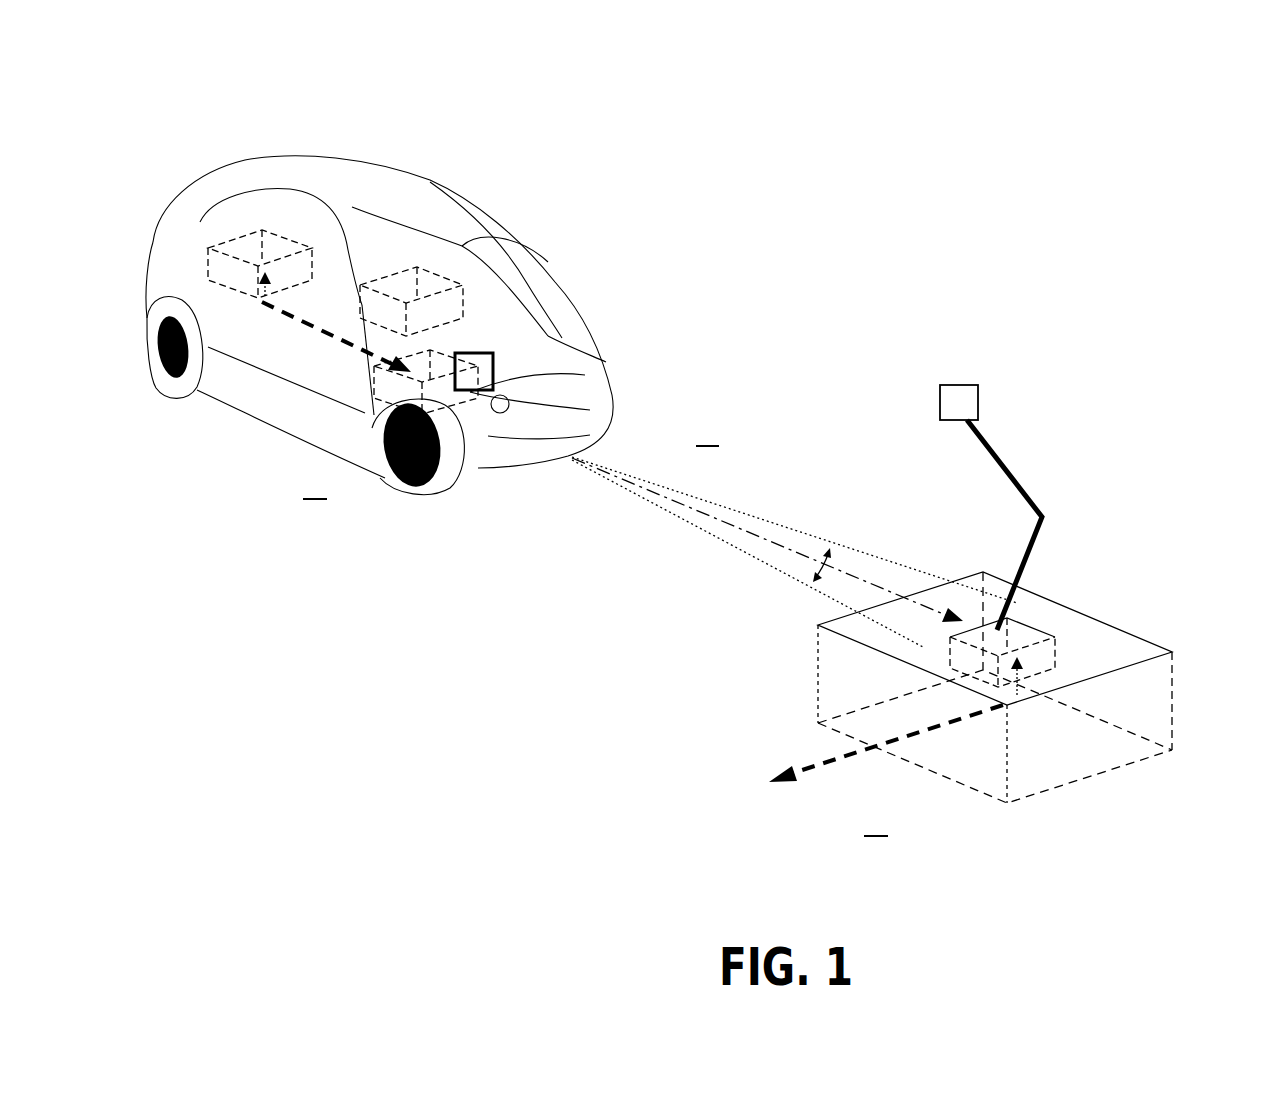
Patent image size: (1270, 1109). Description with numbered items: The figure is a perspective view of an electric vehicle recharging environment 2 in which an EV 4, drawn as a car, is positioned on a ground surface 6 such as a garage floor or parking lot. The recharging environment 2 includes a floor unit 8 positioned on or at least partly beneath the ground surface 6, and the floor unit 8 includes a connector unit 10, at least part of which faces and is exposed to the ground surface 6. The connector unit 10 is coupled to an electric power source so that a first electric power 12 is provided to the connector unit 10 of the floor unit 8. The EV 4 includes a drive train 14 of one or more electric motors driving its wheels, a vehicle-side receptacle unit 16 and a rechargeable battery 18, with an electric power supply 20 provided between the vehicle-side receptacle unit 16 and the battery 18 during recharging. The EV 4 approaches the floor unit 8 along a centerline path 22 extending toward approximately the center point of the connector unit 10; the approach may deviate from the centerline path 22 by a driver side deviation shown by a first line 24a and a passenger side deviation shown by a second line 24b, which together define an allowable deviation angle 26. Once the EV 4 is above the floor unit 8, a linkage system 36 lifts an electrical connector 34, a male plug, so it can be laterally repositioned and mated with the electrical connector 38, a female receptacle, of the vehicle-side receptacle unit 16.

The electric vehicle recharging environment 2 is at (1098, 212).
The electric vehicle 4 is at (510, 223).
The ground surface 6 is at (595, 622).
The floor unit 8 is at (1110, 623).
The connector unit 10 is at (1028, 625).
The first electric power 12 is at (813, 762).
The drive train 14 is at (447, 277).
The vehicle-side receptacle unit 16 is at (460, 408).
The rechargeable power storage device 18 is at (262, 230).
The electric power supply 20 is at (324, 340).
The centerline path 22 is at (752, 530).
The first line 24a is at (895, 563).
The second line 24b is at (660, 508).
The allowable deviation angle 26 is at (810, 572).
The electrical connector 34 is at (960, 403).
The linkage system 36 is at (1003, 455).
The electrical connector 38 is at (473, 368).